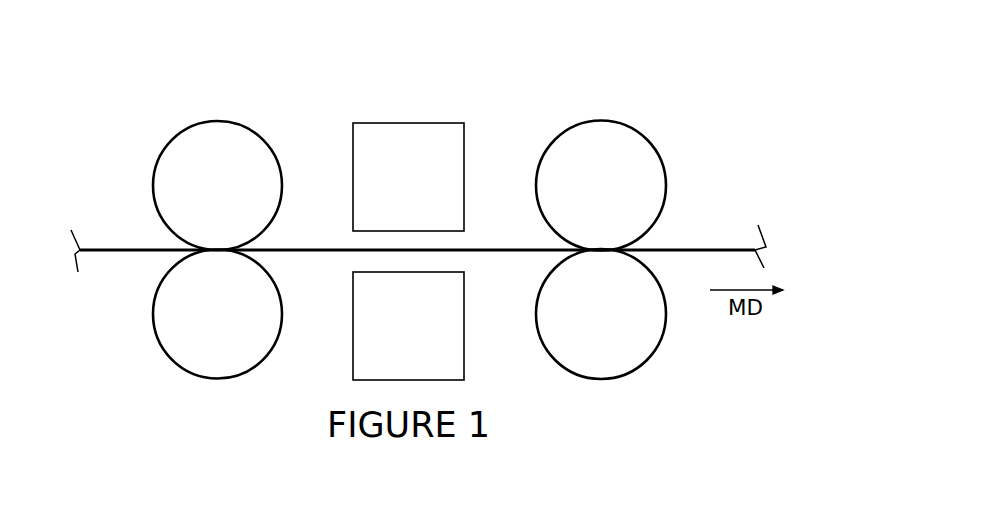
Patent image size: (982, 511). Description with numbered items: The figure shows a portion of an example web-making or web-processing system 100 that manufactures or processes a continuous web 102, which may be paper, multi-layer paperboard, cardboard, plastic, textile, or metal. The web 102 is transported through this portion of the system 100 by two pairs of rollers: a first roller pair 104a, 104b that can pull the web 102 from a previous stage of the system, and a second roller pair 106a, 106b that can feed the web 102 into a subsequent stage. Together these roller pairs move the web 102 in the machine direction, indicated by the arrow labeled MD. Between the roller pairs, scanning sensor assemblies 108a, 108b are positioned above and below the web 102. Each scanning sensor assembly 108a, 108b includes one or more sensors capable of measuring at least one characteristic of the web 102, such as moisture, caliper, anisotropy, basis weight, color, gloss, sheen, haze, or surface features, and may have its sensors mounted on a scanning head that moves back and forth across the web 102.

The web-making or web-processing system 100 is at (649, 33).
The web 102 is at (110, 247).
The roller 104a is at (248, 194).
The roller 104b is at (248, 325).
The roller 106a is at (627, 196).
The roller 106b is at (627, 328).
The scanning sensor assembly 108a is at (440, 188).
The scanning sensor assembly 108b is at (440, 338).